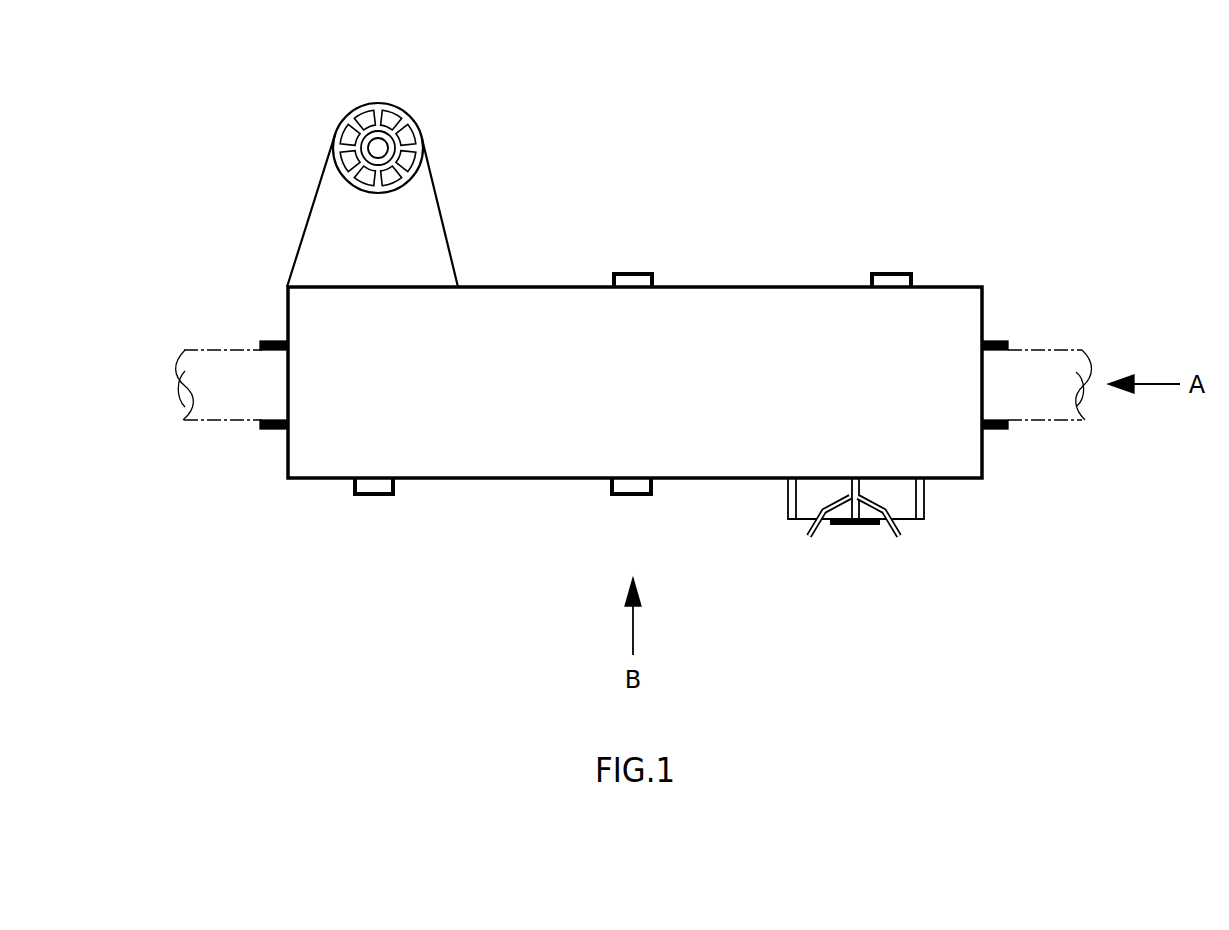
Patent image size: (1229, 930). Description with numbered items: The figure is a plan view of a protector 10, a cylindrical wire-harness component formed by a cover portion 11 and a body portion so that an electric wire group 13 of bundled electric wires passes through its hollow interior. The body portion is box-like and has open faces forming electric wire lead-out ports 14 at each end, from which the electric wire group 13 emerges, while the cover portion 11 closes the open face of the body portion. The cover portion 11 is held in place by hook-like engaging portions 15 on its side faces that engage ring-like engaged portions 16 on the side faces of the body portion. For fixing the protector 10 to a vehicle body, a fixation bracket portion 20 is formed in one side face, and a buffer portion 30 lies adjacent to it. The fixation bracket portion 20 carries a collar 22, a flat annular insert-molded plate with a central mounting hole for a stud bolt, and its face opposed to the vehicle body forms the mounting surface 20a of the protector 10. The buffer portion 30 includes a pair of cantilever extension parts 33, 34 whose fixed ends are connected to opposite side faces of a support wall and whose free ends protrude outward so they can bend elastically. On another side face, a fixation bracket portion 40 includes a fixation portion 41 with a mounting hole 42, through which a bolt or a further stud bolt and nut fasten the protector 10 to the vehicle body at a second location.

The protector 10 is at (752, 244).
The cover portion 11 is at (457, 438).
The electric wire group 13 is at (218, 350).
The electric wire lead-out port 14 is at (263, 340).
The engaging portion 15 is at (372, 483).
The engaged portion 16 is at (363, 498).
The fixation bracket portion 20 is at (863, 575).
The mounting surface 20a is at (907, 524).
The collar 22 is at (859, 526).
The buffer portion 30 is at (832, 573).
The extension part 33 is at (806, 531).
The extension part 34 is at (893, 515).
The fixation bracket portion 40 is at (434, 165).
The fixation portion 41 is at (352, 117).
The mounting hole 42 is at (398, 122).